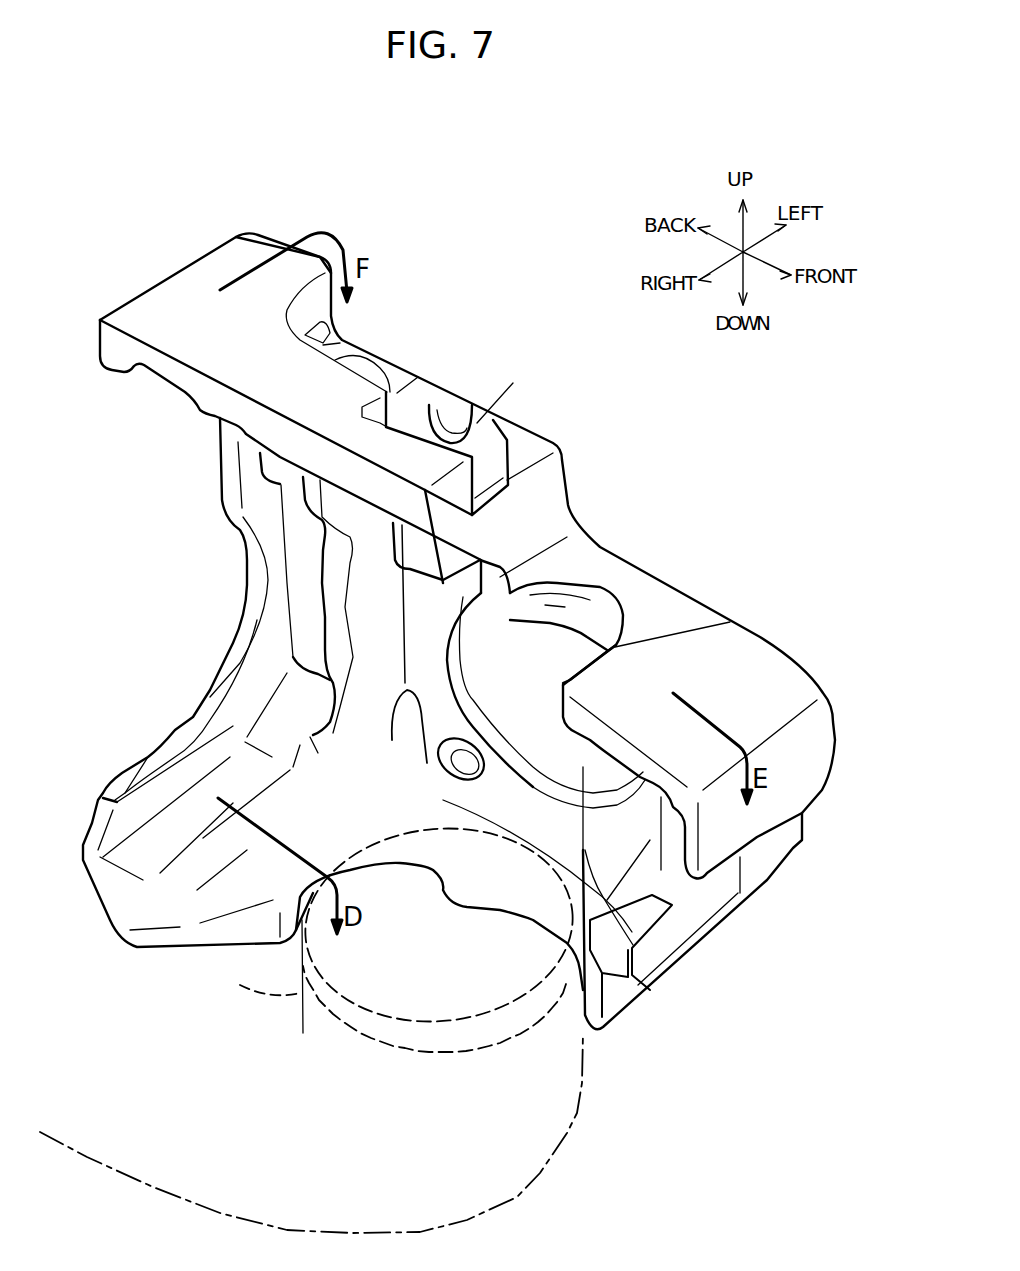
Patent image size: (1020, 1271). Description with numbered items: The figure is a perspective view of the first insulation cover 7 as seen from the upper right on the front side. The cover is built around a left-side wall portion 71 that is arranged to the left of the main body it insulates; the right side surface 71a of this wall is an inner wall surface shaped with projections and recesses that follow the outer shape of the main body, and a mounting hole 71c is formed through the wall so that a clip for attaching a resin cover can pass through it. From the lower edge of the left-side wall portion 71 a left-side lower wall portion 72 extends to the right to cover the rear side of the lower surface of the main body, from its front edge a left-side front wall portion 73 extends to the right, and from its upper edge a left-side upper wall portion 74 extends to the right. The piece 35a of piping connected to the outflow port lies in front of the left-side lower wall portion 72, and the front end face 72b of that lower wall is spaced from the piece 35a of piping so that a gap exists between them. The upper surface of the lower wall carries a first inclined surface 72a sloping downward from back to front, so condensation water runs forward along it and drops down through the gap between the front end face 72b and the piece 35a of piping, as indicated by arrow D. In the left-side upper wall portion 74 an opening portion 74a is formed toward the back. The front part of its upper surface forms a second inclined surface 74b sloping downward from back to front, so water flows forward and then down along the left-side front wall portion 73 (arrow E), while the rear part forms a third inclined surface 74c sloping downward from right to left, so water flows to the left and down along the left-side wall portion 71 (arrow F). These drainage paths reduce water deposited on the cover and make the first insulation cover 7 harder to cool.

The first insulation cover 7 is at (461, 310).
The third inclined surface 74c is at (185, 323).
The opening portion 74a is at (480, 458).
The left-side upper wall portion 74 is at (602, 567).
The second inclined surface 74b is at (748, 662).
The first inclined surface 72a is at (190, 817).
The left-side lower wall portion 72 is at (217, 933).
The front end face 72b is at (367, 867).
The mounting hole 71c is at (440, 817).
The right side surface 71a is at (583, 847).
The left-side wall portion 71 is at (550, 986).
The left-side front wall portion 73 is at (727, 829).
The piece of piping 35a is at (555, 1127).